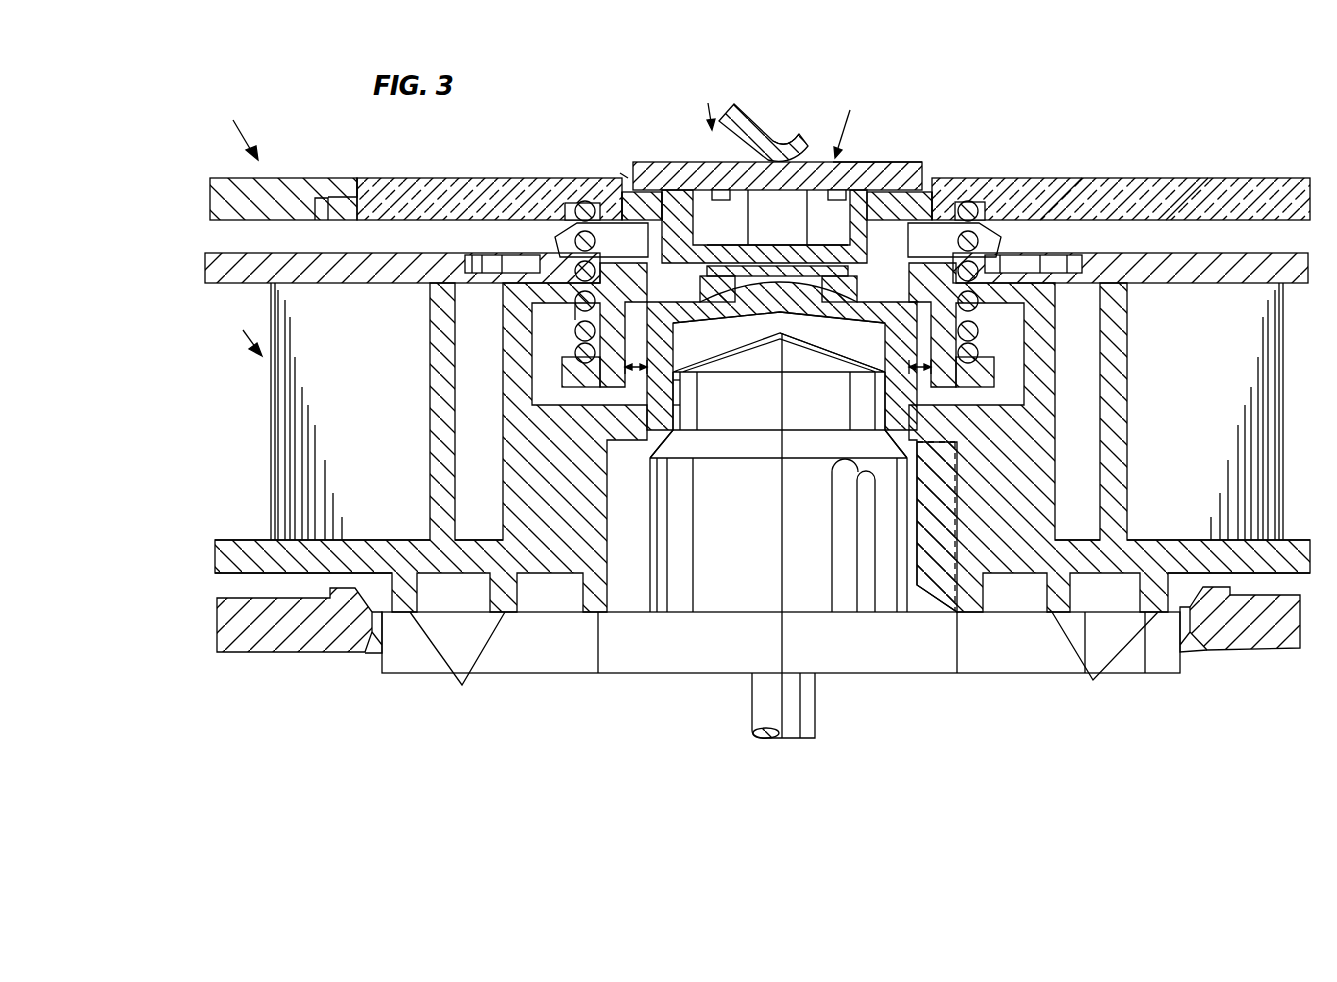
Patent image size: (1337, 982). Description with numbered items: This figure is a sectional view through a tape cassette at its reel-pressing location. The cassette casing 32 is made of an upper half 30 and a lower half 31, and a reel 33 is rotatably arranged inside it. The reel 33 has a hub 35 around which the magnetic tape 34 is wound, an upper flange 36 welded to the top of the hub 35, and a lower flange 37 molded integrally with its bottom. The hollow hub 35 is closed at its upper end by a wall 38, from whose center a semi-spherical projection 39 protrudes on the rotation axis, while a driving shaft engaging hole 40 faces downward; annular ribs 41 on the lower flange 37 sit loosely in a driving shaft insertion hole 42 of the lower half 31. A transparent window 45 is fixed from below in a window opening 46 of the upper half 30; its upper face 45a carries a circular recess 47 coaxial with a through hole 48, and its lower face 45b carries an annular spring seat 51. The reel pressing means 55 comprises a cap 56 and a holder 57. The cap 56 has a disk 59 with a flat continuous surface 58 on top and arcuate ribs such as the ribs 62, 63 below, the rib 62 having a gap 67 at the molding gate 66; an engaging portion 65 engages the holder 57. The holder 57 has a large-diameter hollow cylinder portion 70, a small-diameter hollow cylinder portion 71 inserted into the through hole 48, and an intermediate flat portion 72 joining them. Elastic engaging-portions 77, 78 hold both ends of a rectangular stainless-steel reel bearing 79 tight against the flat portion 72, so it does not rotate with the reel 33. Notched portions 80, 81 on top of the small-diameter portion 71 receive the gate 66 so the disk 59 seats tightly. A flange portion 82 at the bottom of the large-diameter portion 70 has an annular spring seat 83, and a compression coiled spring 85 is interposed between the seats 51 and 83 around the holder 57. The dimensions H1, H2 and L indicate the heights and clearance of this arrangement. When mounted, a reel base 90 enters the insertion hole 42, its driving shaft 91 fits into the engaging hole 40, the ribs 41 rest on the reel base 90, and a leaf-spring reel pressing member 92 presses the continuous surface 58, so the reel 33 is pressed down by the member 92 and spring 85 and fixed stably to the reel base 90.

The upper half 30 is at (323, 178).
The lower half 31 is at (278, 645).
The cassette casing 32 is at (235, 125).
The reel 33 is at (751, 411).
The magnetic tape 34 is at (283, 405).
The hub 35 is at (565, 523).
The upper flange 36 is at (336, 264).
The lower flange 37 is at (235, 547).
The wall 38 is at (675, 381).
The semi-spherical projection 39 is at (780, 290).
The driving shaft engaging hole 40 is at (917, 555).
The annular ribs 41 is at (784, 662).
The driving shaft insertion hole 42 is at (368, 650).
The transparent window 45 is at (1047, 185).
The upper face 45a is at (1108, 178).
The lower face 45b is at (1185, 222).
The window opening 46 is at (373, 178).
The circular recess 47 is at (628, 186).
The through hole 48 is at (647, 192).
The spring seat 51 is at (987, 210).
The reel pressing means 55 is at (705, 103).
The cap 56 is at (877, 122).
The holder 57 is at (674, 407).
The continuous surface 58 is at (744, 150).
The disk 59 is at (817, 165).
The arcuate rib 62 is at (719, 192).
The arcuate rib 63 is at (840, 192).
The engaging portion 65 is at (797, 213).
The gate 66 is at (670, 192).
The gap 67 is at (692, 190).
The large-diameter hollow cylinder portion 70 is at (628, 333).
The small-diameter hollow cylinder portion 71 is at (697, 217).
The intermediate flat portion 72 is at (763, 250).
The elastic engaging-portion 77 is at (740, 292).
The elastic engaging-portion 78 is at (844, 276).
The reel bearing 79 is at (793, 332).
The notched portion 80 is at (676, 215).
The notched portion 81 is at (878, 200).
The flange portion 82 is at (905, 432).
The annular spring seat 83 is at (576, 352).
The spring 85 is at (560, 242).
The reel base 90 is at (632, 662).
The driving shaft 91 is at (718, 598).
The reel pressing member 92 is at (783, 143).
The height H1 is at (620, 173).
The height H2 is at (553, 313).
The gap L is at (778, 353).